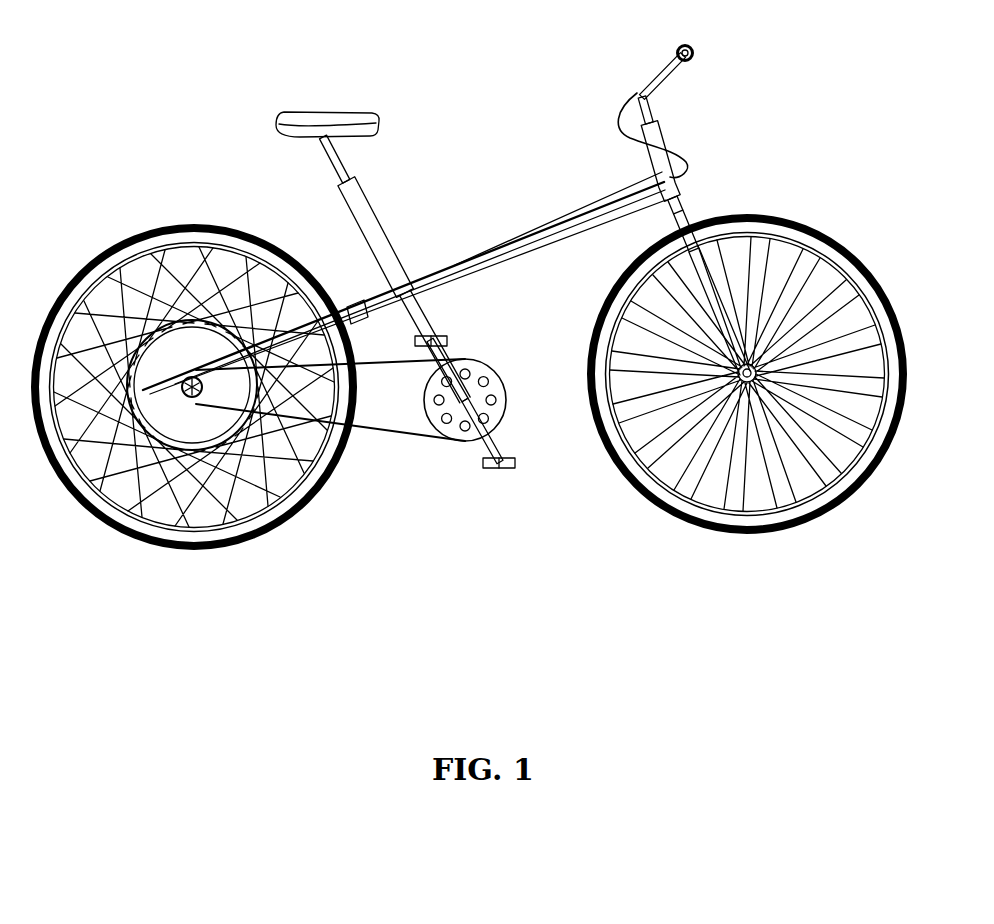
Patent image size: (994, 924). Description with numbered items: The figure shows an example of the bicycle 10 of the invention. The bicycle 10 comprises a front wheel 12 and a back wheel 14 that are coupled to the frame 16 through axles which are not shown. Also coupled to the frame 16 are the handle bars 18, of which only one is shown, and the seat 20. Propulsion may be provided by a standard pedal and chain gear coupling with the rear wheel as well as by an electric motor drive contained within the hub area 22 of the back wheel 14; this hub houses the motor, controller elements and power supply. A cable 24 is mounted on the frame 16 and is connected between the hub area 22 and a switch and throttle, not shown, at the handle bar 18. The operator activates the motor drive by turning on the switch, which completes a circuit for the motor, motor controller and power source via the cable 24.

The bicycle 10 is at (477, 578).
The front wheel 12 is at (747, 386).
The back wheel 14 is at (194, 417).
The frame 16 is at (404, 283).
The handle bars 18 is at (703, 71).
The seat 20 is at (360, 108).
The hub area 22 is at (202, 352).
The cable 24 is at (631, 136).